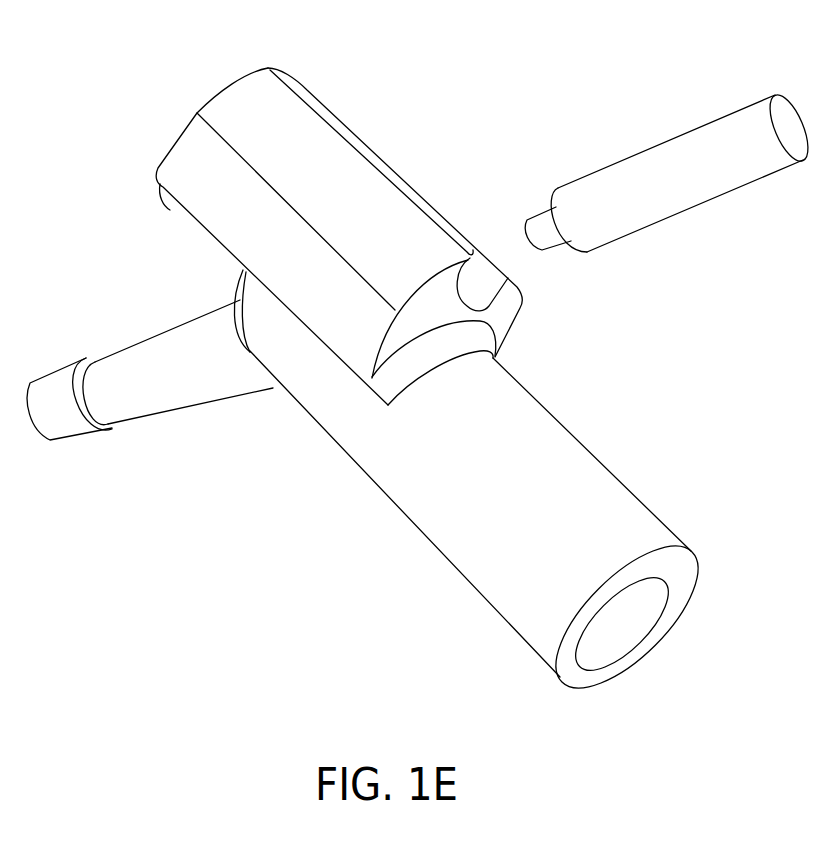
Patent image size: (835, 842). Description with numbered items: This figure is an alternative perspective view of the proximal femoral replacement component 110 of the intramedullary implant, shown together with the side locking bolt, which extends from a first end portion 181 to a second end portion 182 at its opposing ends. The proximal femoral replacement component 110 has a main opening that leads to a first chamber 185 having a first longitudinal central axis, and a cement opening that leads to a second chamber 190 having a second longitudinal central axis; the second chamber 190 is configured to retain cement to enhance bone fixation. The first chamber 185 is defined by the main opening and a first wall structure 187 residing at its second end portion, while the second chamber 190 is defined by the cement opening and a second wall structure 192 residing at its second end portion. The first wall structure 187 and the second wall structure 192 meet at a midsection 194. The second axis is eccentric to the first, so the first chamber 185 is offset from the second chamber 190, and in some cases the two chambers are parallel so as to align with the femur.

The proximal femoral replacement component 110 is at (256, 487).
The first end portion 181 is at (715, 96).
The second end portion 182 is at (533, 172).
The first chamber 185 is at (621, 440).
The first wall structure 187 is at (240, 292).
The second chamber 190 is at (361, 107).
The second wall structure 192 is at (520, 307).
The midsection 194 is at (535, 357).